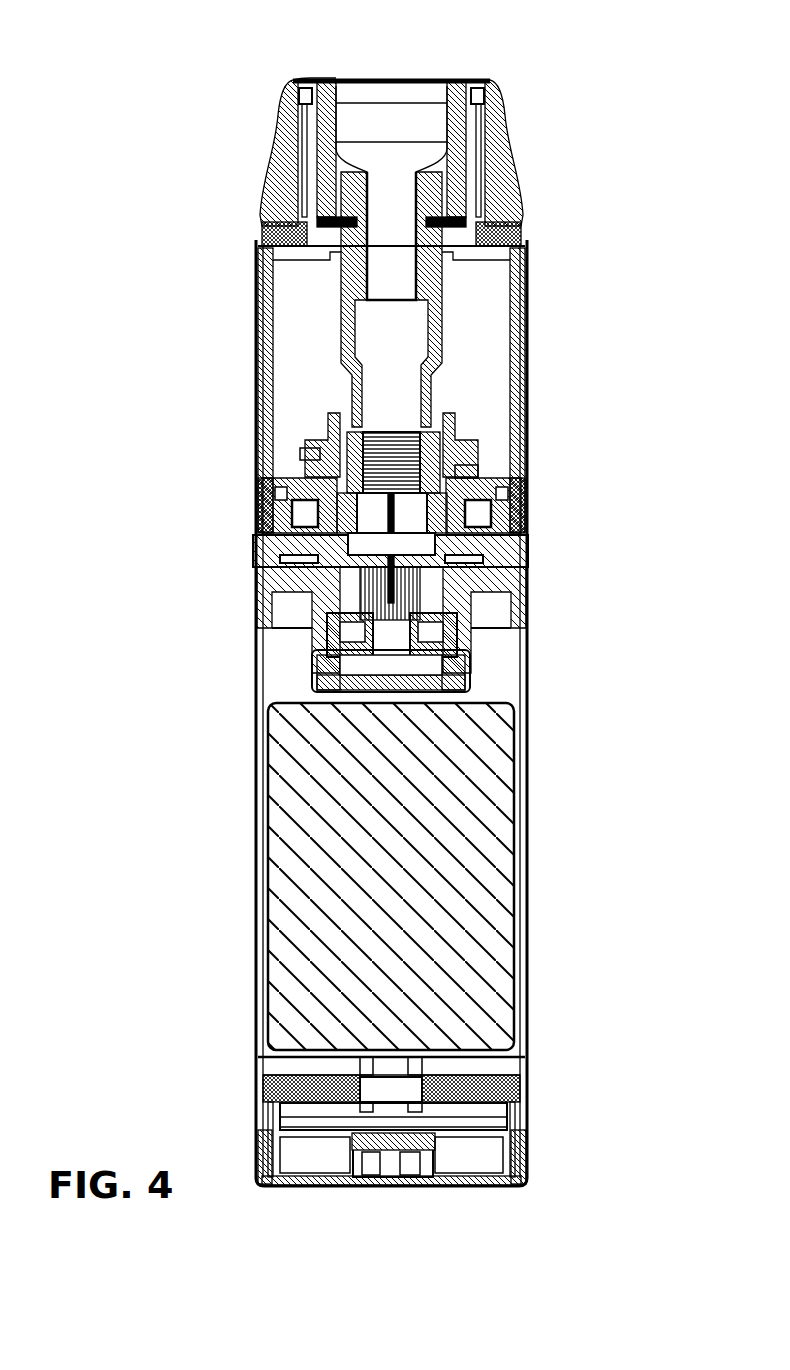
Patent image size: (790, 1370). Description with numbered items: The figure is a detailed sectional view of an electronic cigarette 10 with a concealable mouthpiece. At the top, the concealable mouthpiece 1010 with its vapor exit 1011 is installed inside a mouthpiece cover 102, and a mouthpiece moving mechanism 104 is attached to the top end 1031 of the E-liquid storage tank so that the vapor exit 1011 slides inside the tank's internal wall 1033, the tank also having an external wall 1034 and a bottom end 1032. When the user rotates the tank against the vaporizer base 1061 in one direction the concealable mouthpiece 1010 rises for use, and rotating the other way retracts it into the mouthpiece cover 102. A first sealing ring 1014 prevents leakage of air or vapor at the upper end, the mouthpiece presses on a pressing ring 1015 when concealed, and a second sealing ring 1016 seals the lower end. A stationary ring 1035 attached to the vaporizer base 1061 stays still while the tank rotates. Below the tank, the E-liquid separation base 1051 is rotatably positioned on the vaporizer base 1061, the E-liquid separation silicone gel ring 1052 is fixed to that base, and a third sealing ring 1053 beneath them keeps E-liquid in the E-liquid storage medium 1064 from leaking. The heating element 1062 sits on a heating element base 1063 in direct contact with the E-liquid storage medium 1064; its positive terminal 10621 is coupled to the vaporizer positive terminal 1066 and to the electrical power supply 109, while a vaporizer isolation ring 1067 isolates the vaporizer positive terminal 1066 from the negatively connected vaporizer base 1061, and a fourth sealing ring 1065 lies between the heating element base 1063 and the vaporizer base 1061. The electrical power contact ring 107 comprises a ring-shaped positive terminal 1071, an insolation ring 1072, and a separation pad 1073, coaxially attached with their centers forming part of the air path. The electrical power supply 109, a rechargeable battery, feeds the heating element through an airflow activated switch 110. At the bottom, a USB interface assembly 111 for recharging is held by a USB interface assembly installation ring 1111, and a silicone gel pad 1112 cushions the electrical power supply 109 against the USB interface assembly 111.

The electronic cigarette 10 is at (91, 136).
The mouthpiece cover 102 is at (497, 93).
The mouthpiece moving mechanism 104 is at (480, 155).
The concealable mouthpiece 1010 is at (290, 85).
The vapor exit 1011 is at (350, 187).
The first sealing ring 1014 is at (300, 115).
The pressing ring 1015 is at (470, 223).
The second sealing ring 1016 is at (307, 233).
The top end 1031 is at (525, 255).
The bottom end 1032 is at (528, 502).
The internal wall 1033 is at (337, 303).
The external wall 1034 is at (523, 363).
The stationary ring 1035 is at (530, 510).
The E-liquid separation base 1051 is at (480, 435).
The E-liquid separation silicone gel ring 1052 is at (327, 437).
The third sealing ring 1053 is at (467, 472).
The vaporizer base 1061 is at (270, 547).
The heating element 1062 is at (387, 433).
The positive terminal 10621 is at (283, 497).
The heating element base 1063 is at (300, 483).
The E-liquid storage medium 1064 is at (310, 453).
The fourth sealing ring 1065 is at (533, 542).
The vaporizer positive terminal 1066 is at (283, 563).
The electrical power contact ring 107 is at (258, 592).
The vaporizer isolation ring 1067 is at (518, 620).
The positive terminal 1071 is at (355, 622).
The insolation ring 1072 is at (372, 612).
The separation pad 1073 is at (465, 682).
The electrical power supply 109 is at (477, 908).
The airflow activated switch 110 is at (410, 1093).
The USB interface assembly installation ring 1111 is at (492, 1120).
The silicone gel pad 1112 is at (275, 1088).
The USB interface assembly 111 is at (417, 1143).